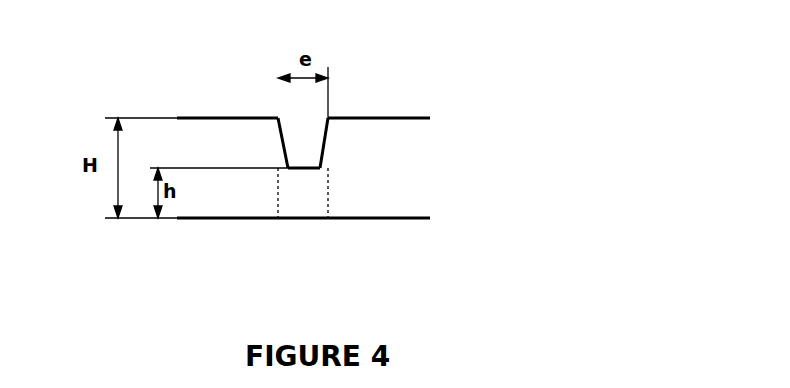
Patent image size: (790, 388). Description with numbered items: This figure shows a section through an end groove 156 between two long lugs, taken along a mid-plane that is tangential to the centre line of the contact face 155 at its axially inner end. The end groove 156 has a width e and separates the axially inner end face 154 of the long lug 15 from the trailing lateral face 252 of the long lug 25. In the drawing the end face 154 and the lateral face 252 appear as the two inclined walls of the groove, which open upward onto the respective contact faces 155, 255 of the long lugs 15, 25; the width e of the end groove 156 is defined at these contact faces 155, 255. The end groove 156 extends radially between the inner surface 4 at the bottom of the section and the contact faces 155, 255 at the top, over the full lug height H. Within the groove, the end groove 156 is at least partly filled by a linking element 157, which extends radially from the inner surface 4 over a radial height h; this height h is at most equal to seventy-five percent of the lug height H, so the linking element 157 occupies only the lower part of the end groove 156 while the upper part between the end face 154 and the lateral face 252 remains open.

The inner surface 4 is at (378, 220).
The long lug 15 is at (339, 143).
The long lug 25 is at (237, 158).
The axially inner end face 154 is at (325, 145).
The contact face 155 is at (405, 91).
The end groove 156 is at (305, 126).
The linking element 157 is at (307, 195).
The trailing lateral face 252 is at (283, 143).
The contact face 255 is at (228, 118).